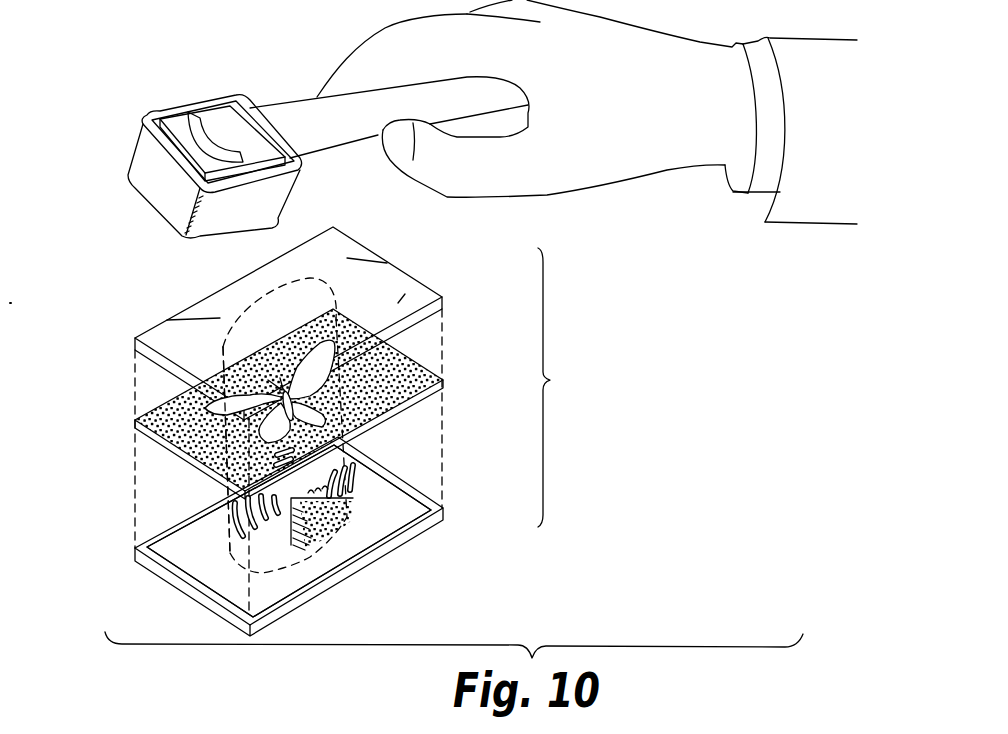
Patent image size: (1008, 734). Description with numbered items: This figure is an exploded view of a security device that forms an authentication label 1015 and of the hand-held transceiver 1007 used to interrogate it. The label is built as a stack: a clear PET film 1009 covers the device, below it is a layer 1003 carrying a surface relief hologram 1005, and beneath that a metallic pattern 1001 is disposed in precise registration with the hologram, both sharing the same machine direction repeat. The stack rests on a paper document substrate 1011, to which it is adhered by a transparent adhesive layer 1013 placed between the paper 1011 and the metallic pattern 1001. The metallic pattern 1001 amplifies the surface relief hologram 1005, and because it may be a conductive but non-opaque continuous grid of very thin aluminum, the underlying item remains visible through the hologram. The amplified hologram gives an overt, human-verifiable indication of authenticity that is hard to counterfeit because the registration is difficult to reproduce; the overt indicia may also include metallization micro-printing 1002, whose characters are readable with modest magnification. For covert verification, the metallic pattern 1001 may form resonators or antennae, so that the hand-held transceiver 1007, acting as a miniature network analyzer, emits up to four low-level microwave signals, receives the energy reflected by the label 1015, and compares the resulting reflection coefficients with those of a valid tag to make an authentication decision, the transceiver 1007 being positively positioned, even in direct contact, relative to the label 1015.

The metallic pattern 1001 is at (235, 510).
The metallization micro-printing 1002 is at (239, 539).
The layer 1003 is at (400, 368).
The surface relief hologram 1005 is at (230, 396).
The transceiver 1007 is at (168, 100).
The clear PET film 1009 is at (407, 291).
The paper document substrate 1011 is at (348, 568).
The transparent adhesive layer 1013 is at (272, 588).
The authentication label 1015 is at (582, 387).